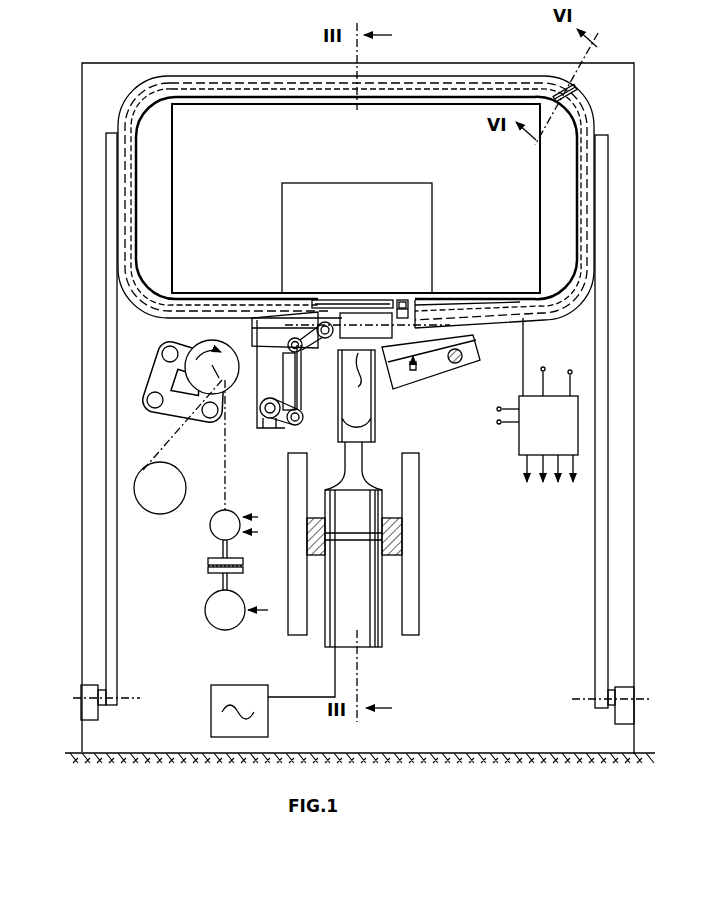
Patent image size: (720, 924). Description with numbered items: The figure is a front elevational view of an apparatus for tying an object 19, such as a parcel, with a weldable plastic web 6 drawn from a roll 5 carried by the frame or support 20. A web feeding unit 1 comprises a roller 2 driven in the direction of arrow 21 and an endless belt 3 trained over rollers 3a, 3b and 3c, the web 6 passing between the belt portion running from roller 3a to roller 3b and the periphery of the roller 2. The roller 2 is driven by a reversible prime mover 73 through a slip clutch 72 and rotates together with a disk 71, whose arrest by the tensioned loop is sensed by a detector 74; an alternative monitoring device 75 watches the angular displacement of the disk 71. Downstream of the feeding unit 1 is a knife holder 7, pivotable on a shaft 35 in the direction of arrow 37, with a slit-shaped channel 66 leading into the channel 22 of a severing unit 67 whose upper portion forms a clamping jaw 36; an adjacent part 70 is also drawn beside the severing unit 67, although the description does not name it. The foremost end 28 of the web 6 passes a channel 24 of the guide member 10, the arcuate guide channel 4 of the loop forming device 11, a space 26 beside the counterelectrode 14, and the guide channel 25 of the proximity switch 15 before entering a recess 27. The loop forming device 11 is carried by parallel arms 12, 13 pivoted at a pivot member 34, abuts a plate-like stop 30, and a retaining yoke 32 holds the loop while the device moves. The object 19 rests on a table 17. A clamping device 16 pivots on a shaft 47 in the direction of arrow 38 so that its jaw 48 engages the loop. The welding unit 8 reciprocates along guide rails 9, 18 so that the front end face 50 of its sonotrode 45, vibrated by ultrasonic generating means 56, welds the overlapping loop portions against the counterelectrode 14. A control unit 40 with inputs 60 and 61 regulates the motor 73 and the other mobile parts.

The web feeding unit 1 is at (176, 419).
The roller 2 is at (230, 380).
The endless belt 3 is at (154, 366).
The roller 3a is at (150, 378).
The roller 3b is at (152, 409).
The roller 3c is at (147, 408).
The guide channel 4 is at (534, 316).
The roll 5 is at (144, 472).
The web 6 is at (176, 444).
The knife holder 7 is at (258, 400).
The welding unit 8 is at (364, 470).
The guide rail 9 is at (415, 636).
The guide member 10 is at (339, 340).
The loop forming device 11 is at (138, 218).
The arm 12 is at (118, 637).
The arm 13 is at (596, 636).
The counterelectrode 14 is at (329, 300).
The proximity switch 15 is at (403, 299).
The clamping device 16 is at (456, 368).
The table 17 is at (192, 292).
The guide rail 18 is at (297, 636).
The object 19 is at (286, 194).
The support 20 is at (616, 715).
The arrow 21 is at (168, 345).
The channel 22 is at (222, 354).
The channel 24 is at (352, 300).
The guide channel 25 is at (406, 300).
The space 26 is at (395, 300).
The recess 27 is at (457, 307).
The foremost end 28 is at (417, 305).
The stop 30 is at (198, 74).
The retaining yoke 32 is at (561, 88).
The pivot member 34 is at (128, 697).
The shaft 35 is at (269, 428).
The clamping jaw 36 is at (323, 321).
The arrow 37 is at (298, 323).
The arrow 38 is at (424, 377).
The control unit 40 is at (520, 440).
The sonotrode 45 is at (338, 438).
The shaft 47 is at (463, 360).
The jaw 48 is at (410, 370).
The front end face 50 is at (356, 396).
The ultrasonic wave generating means 56 is at (268, 716).
The input 60 is at (543, 369).
The input 61 is at (570, 370).
The channel 66 is at (252, 328).
The severing unit 67 is at (285, 358).
The rod 70 is at (300, 376).
The disk 71 is at (211, 531).
The slip clutch 72 is at (208, 569).
The prime mover 73 is at (205, 610).
The detector 74 is at (244, 513).
The monitoring device 75 is at (252, 548).